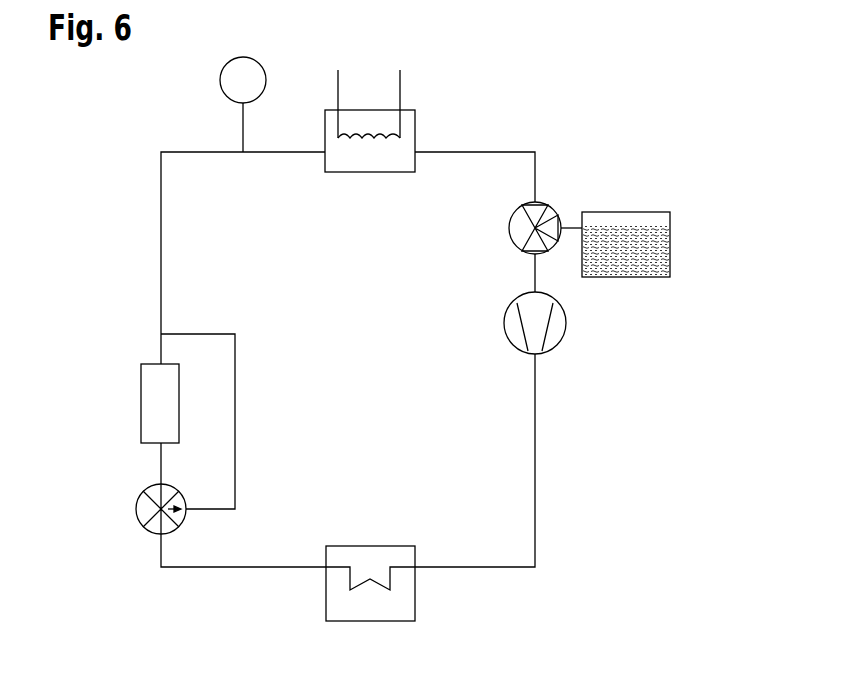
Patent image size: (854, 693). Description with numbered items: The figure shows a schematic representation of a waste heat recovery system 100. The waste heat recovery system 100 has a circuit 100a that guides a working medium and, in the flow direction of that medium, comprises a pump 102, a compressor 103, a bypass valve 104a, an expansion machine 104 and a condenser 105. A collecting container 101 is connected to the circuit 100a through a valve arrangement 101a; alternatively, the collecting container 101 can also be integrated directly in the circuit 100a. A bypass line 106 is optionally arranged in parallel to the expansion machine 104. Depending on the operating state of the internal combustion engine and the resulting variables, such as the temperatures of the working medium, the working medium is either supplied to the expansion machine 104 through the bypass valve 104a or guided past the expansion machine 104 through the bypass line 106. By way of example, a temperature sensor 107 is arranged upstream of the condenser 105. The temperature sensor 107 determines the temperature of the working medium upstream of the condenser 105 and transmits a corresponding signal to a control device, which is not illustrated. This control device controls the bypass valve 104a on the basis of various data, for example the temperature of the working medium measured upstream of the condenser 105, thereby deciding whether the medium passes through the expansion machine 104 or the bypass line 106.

The waste heat recovery system 100 is at (657, 97).
The circuit 100a is at (161, 240).
The collecting container 101 is at (670, 222).
The valve arrangement 101a is at (510, 228).
The pump 102 is at (509, 324).
The compressor 103 is at (367, 558).
The expansion machine 104 is at (157, 405).
The bypass valve 104a is at (137, 509).
The condenser 105 is at (371, 158).
The bypass line 106 is at (235, 396).
The temperature sensor 107 is at (220, 80).